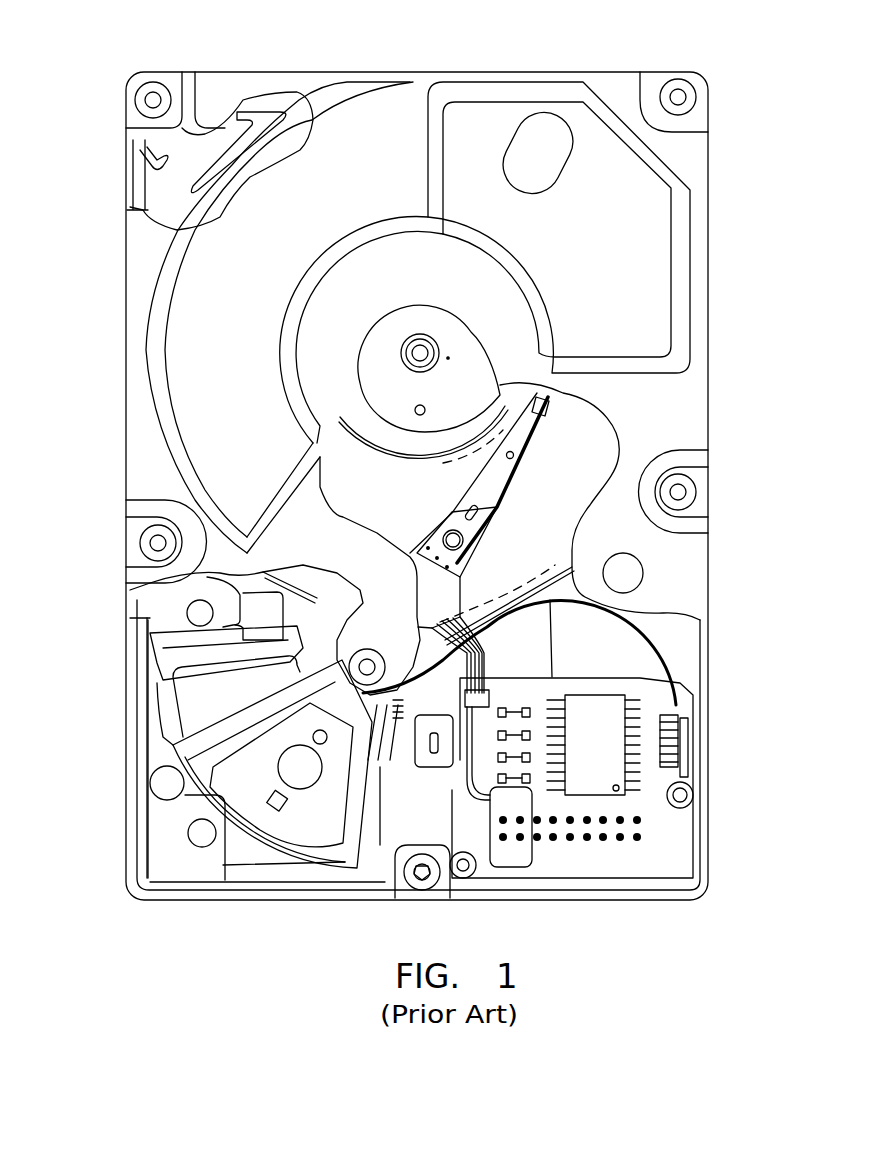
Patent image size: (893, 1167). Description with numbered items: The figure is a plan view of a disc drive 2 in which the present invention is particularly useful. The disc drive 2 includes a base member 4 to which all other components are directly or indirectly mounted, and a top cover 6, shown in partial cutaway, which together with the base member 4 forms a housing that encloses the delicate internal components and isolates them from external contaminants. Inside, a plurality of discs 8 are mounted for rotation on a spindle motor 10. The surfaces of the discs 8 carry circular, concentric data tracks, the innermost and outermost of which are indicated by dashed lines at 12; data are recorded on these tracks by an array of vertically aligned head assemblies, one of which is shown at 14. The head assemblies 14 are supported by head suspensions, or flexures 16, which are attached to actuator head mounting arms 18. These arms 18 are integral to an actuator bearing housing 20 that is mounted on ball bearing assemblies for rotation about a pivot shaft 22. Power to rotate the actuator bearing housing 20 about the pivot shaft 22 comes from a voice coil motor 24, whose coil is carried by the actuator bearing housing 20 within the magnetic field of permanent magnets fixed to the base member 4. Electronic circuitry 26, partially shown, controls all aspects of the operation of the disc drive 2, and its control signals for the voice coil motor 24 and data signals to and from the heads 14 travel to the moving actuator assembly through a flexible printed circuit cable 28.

The disc drive 2 is at (105, 326).
The base member 4 is at (128, 846).
The top cover 6 is at (413, 80).
The discs 8 is at (563, 520).
The spindle motor 10 is at (458, 355).
The data tracks 12 is at (458, 466).
The head assembly 14 is at (563, 393).
The head suspensions 16 is at (500, 475).
The actuator head mounting arms 18 is at (470, 580).
The actuator bearing housing 20 is at (327, 613).
The pivot shaft 22 is at (358, 662).
The voice coil motor 24 is at (252, 852).
The electronic circuitry 26 is at (652, 713).
The flexible printed circuit cable 28 is at (653, 640).